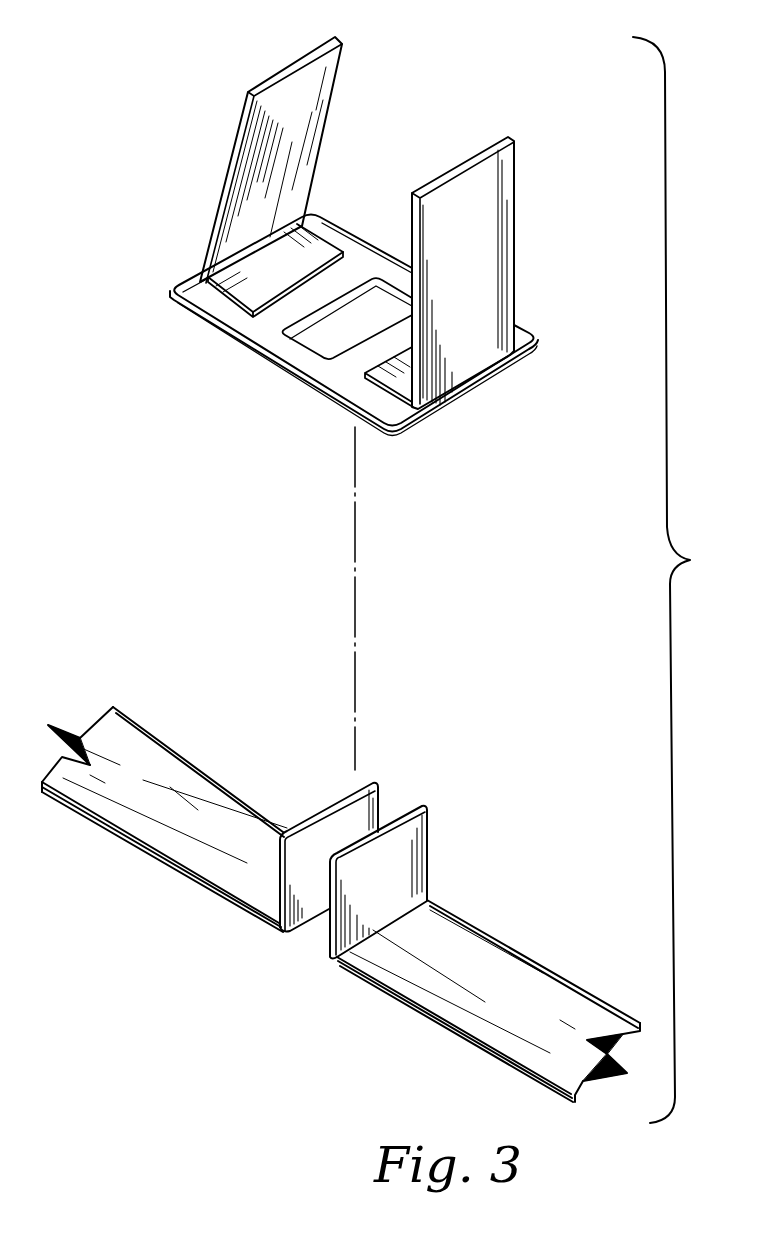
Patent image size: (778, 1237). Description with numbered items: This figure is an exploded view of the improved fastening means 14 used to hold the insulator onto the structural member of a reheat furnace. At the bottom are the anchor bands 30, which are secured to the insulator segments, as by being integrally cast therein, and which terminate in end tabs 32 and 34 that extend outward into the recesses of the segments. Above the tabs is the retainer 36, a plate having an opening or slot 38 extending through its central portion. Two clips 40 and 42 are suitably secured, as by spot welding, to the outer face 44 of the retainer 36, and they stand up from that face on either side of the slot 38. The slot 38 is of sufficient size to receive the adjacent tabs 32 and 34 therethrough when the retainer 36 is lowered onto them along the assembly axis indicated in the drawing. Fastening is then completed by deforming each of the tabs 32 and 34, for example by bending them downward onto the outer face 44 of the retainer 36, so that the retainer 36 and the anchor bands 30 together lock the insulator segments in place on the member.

The fastening means 14 is at (681, 580).
The anchor band 30 is at (60, 870).
The end tab 32 is at (343, 800).
The end tab 34 is at (430, 840).
The retainer 36 is at (173, 313).
The slot 38 is at (348, 356).
The clip 40 is at (240, 128).
The clip 42 is at (515, 203).
The outer face 44 is at (332, 382).